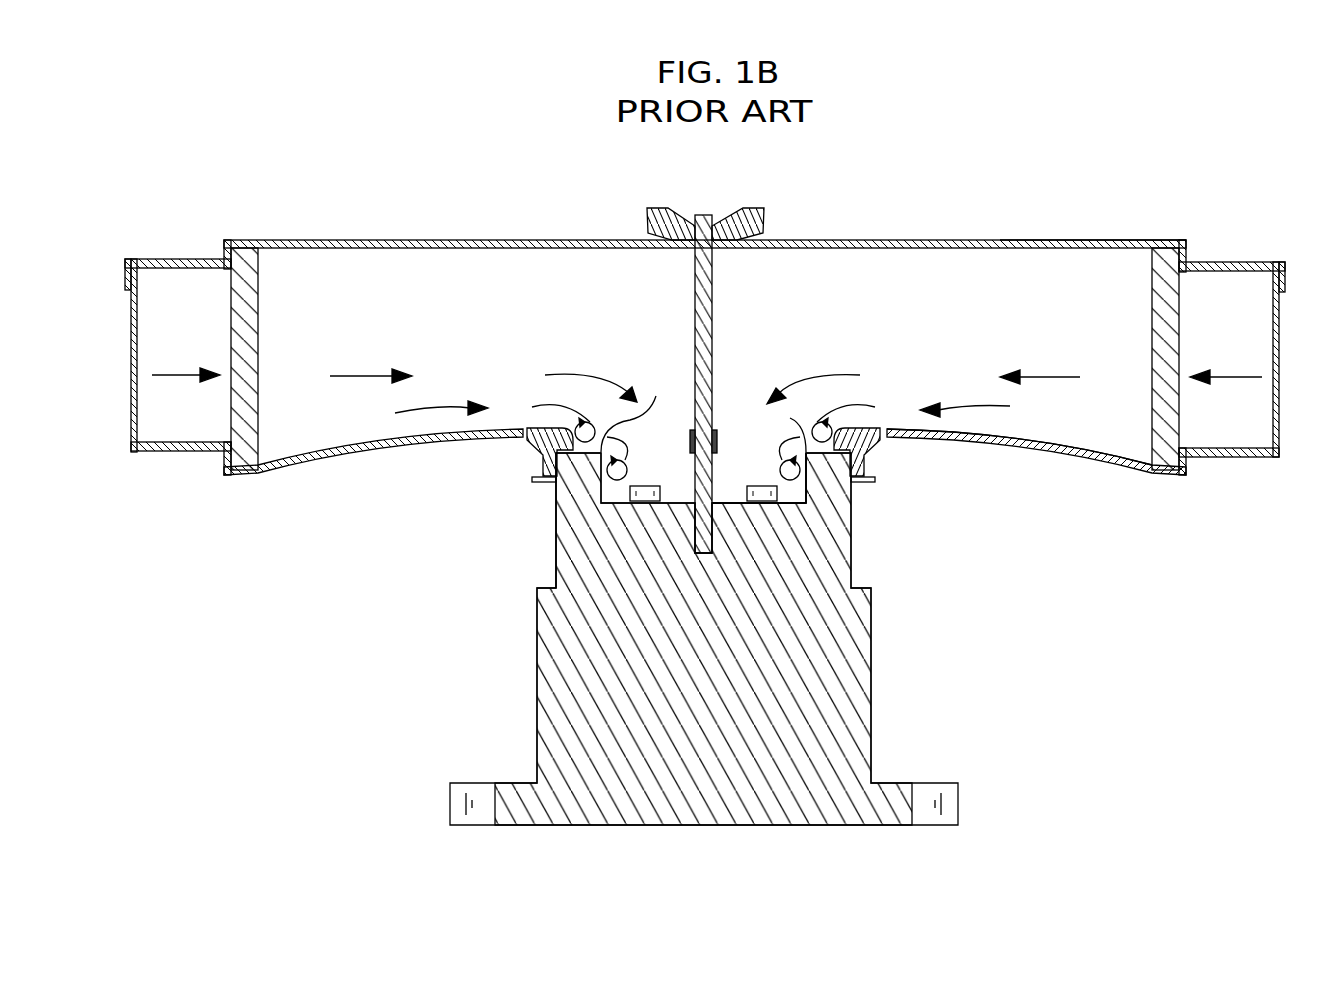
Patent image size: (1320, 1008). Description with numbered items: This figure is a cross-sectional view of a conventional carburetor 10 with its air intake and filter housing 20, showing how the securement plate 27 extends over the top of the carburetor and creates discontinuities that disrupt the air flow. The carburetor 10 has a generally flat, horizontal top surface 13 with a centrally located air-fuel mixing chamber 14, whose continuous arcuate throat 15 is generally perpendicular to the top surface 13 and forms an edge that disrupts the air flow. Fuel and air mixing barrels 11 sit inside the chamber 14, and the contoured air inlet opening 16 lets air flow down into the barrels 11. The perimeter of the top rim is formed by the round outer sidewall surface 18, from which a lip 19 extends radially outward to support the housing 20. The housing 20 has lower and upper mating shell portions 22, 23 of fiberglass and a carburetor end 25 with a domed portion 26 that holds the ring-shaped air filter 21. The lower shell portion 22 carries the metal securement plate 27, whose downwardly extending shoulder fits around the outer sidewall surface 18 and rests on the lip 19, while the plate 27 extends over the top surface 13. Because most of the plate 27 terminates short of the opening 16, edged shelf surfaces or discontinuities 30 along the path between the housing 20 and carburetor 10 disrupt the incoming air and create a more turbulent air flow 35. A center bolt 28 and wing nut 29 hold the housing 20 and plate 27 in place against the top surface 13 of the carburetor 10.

The carburetor 10 is at (865, 568).
The fuel and air mixing barrel 11 is at (636, 486).
The top surface 13 is at (803, 488).
The air-fuel mixing chamber 14 is at (748, 479).
The throat 15 is at (793, 490).
The air inlet opening 16 is at (689, 445).
The outer sidewall surface 18 is at (554, 508).
The lip 19 is at (536, 482).
The air intake and filter housing 20 is at (938, 236).
The air filter 21 is at (240, 326).
The lower shell portion 22 is at (1115, 467).
The upper shell portion 23 is at (1122, 242).
The carburetor end 25 is at (1010, 242).
The domed portion 26 is at (1060, 455).
The securement plate 27 is at (530, 444).
The center bolt 28 is at (710, 280).
The wing nut 29 is at (765, 226).
The surface discontinuity 30 is at (605, 385).
The turbulent air flow 35 is at (831, 418).